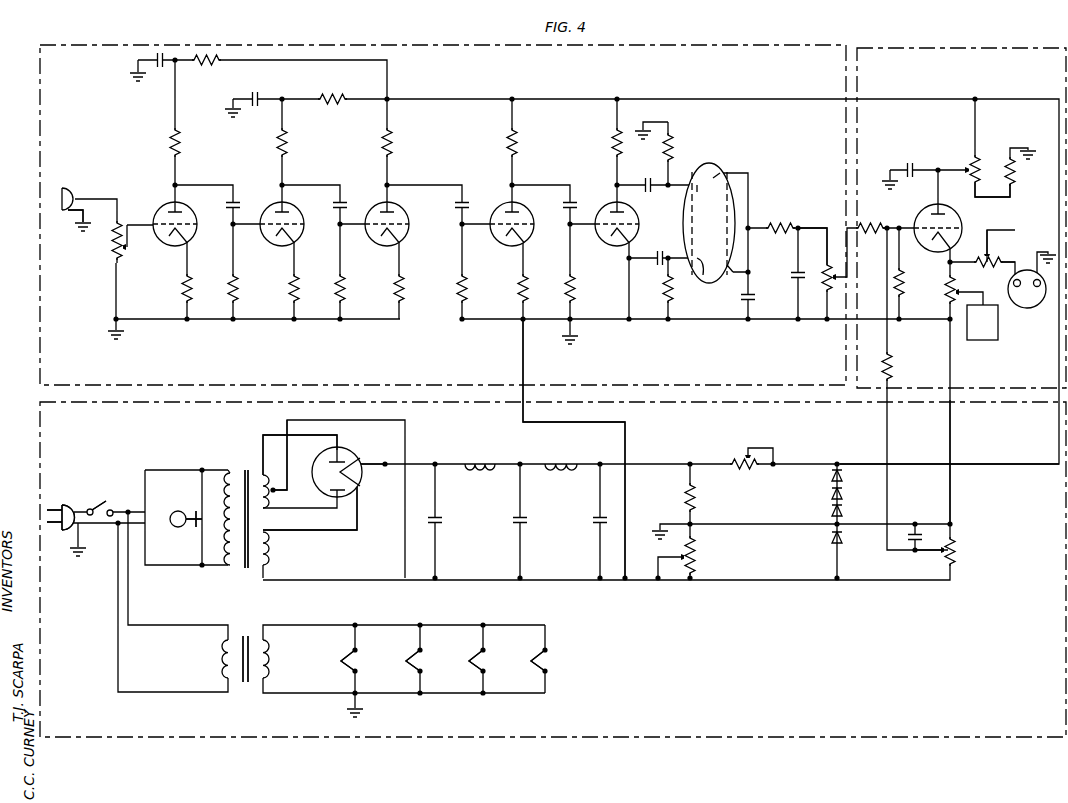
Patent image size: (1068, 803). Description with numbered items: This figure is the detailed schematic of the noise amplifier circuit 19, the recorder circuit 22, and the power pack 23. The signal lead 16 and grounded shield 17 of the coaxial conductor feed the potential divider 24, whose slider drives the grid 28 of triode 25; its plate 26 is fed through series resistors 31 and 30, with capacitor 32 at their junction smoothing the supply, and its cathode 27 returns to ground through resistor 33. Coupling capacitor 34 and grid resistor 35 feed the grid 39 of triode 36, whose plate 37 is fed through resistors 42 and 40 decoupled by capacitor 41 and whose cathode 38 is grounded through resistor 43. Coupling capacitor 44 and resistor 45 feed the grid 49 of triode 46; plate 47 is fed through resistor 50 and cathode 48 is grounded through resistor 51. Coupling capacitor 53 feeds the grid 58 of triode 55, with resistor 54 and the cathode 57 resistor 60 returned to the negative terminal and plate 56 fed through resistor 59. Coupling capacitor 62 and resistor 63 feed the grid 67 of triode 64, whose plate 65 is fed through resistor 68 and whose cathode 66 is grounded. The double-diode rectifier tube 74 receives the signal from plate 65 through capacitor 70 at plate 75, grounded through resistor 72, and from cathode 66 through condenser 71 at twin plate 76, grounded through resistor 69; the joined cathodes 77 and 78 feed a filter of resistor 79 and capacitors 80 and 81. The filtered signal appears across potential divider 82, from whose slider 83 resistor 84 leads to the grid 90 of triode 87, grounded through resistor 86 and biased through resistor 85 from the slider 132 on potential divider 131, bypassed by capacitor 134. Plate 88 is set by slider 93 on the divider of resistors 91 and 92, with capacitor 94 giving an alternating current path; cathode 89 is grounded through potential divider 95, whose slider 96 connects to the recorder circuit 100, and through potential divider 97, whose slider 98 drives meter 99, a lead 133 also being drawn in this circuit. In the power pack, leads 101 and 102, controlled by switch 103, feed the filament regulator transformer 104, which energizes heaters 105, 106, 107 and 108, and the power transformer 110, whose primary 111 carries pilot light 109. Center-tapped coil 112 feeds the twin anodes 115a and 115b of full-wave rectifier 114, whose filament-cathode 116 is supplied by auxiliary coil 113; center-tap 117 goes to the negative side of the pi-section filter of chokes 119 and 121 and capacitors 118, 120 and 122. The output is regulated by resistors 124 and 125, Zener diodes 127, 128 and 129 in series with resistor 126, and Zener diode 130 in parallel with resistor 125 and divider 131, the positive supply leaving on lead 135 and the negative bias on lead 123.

The signal lead 16 is at (50, 200).
The grounded shield 17 is at (51, 212).
The noise amplifier circuit 19 is at (777, 52).
The recorder circuit 22 is at (902, 52).
The power circuit 23 is at (845, 740).
The potential divider 24 is at (110, 245).
The triode 25 is at (160, 208).
The plate 26 is at (182, 206).
The cathode 27 is at (172, 250).
The grid 28 is at (188, 225).
The resistor 30 is at (184, 149).
The resistor 31 is at (208, 58).
The capacitor 32 is at (160, 52).
The resistor 33 is at (180, 289).
The coupling capacitor 34 is at (240, 196).
The resistor 35 is at (239, 286).
The triode 36 is at (266, 198).
The plate 37 is at (290, 207).
The cathode 38 is at (280, 250).
The grid 39 is at (299, 227).
The resistor 40 is at (291, 149).
The capacitor 41 is at (258, 92).
The resistor 42 is at (340, 94).
The resistor 43 is at (298, 287).
The coupling capacitor 44 is at (347, 196).
The resistor 45 is at (347, 290).
The triode 46 is at (393, 205).
The plate 47 is at (394, 210).
The cathode 48 is at (405, 238).
The grid 49 is at (401, 226).
The resistor 50 is at (398, 143).
The resistor 51 is at (407, 289).
The coupling capacitor 53 is at (470, 196).
The resistor 54 is at (455, 285).
The triode 55 is at (498, 243).
The plate 56 is at (522, 210).
The cathode 57 is at (520, 250).
The grid 58 is at (530, 231).
The resistor 59 is at (523, 143).
The resistor 60 is at (531, 290).
The coupling capacitor 62 is at (576, 196).
The resistor 63 is at (580, 290).
The triode 64 is at (604, 246).
The plate 65 is at (637, 211).
The cathode 66 is at (640, 241).
The grid 67 is at (636, 225).
The resistor 68 is at (611, 148).
The resistor 69 is at (675, 305).
The coupling capacitor 70 is at (648, 178).
The coupling condenser 71 is at (659, 265).
The resistor 72 is at (676, 150).
The double-diode rectifier tube 74 is at (709, 223).
The plate 75 is at (702, 183).
The twin plate 76 is at (704, 275).
The cathode 77 is at (733, 170).
The cathode 78 is at (738, 261).
The resistor 79 is at (780, 225).
The capacitor 80 is at (758, 298).
The capacitor 81 is at (790, 275).
The potential divider 82 is at (826, 262).
The slider 83 is at (838, 280).
The resistor 84 is at (872, 225).
The resistor 85 is at (895, 365).
The resistor 86 is at (904, 290).
The triode 87 is at (918, 218).
The plate 88 is at (958, 212).
The cathode 89 is at (936, 258).
The grid 90 is at (964, 233).
The resistor 91 is at (980, 160).
The resistor 92 is at (1016, 173).
The slider 93 is at (966, 161).
The capacitor 94 is at (908, 164).
The potential divider 95 is at (966, 275).
The slider 96 is at (953, 300).
The potential divider 97 is at (1004, 261).
The slider 98 is at (985, 255).
The meter 99 is at (1020, 302).
The recorder circuit 100 is at (986, 340).
The lead 101 is at (103, 530).
The lead 102 is at (81, 505).
The single-throw switch 103 is at (104, 499).
The filament regulator transformer 104 is at (243, 686).
The heater 105 is at (353, 683).
The heater 106 is at (418, 683).
The heater 107 is at (481, 683).
The heater 108 is at (543, 683).
The pilot light 109 is at (176, 510).
The power transformer 110 is at (247, 572).
The primary 111 is at (227, 567).
The center-tapped coil 112 is at (261, 474).
The auxiliary coil 113 is at (274, 563).
The full-wave rectifier 114 is at (321, 462).
The anode 115a is at (340, 461).
The anode 115b is at (341, 500).
The filament-cathode 116 is at (356, 465).
The center-tap 117 is at (275, 491).
The capacitor 118 is at (444, 521).
The choke 119 is at (477, 461).
The capacitor 120 is at (527, 522).
The choke 121 is at (556, 461).
The capacitor 122 is at (595, 524).
The lead 123 is at (630, 453).
The adjustable resistor 124 is at (697, 498).
The adjustable resistor 125 is at (697, 561).
The adjustable resistor 126 is at (738, 461).
The Zener diode 127 is at (843, 476).
The Zener diode 128 is at (832, 495).
The Zener diode 129 is at (843, 510).
The Zener diode 130 is at (832, 543).
The potential divider 131 is at (960, 556).
The slider 132 is at (940, 558).
The conductor 133 is at (953, 446).
The capacitor 134 is at (912, 534).
The lead 135 is at (971, 468).